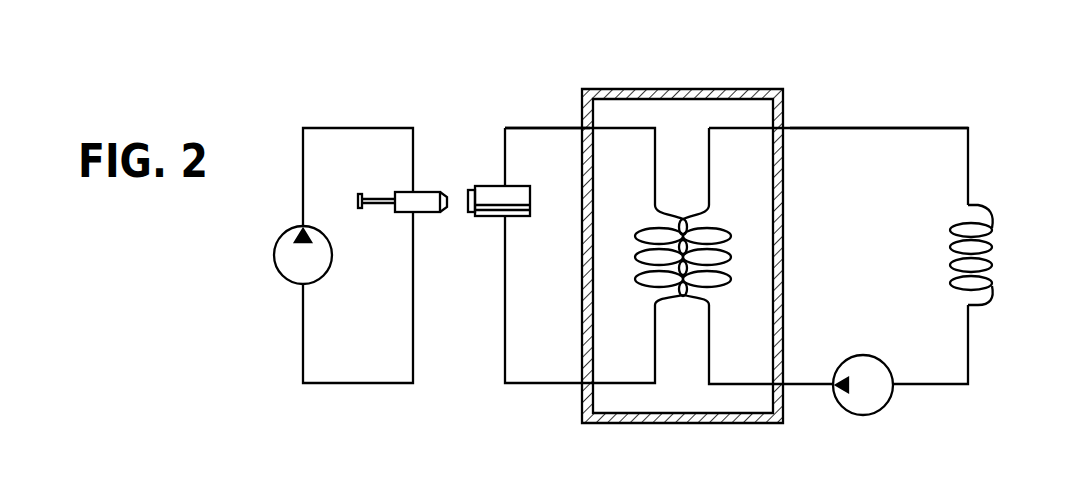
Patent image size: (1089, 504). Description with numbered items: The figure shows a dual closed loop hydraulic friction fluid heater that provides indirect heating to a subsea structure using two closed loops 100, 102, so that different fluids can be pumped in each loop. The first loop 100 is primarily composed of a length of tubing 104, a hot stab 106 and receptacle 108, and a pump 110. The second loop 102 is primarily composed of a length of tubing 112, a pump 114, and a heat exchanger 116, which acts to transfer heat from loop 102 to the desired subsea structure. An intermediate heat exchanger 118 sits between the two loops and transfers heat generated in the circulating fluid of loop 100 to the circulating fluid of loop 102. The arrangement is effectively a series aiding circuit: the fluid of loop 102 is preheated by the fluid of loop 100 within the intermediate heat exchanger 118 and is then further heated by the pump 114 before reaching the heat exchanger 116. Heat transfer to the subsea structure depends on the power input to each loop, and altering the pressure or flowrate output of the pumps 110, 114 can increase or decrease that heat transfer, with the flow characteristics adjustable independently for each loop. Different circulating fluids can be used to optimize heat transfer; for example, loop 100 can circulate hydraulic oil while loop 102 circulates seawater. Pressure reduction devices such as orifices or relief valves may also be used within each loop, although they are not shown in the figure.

The closed loop 100 is at (356, 94).
The closed loop 102 is at (835, 107).
The tubing 104 is at (535, 127).
The hot stab 106 is at (443, 212).
The receptacle 108 is at (492, 186).
The pump 110 is at (283, 262).
The tubing 112 is at (938, 127).
The pump 114 is at (865, 410).
The heat exchanger 116 is at (985, 205).
The intermediate heat exchanger 118 is at (710, 423).